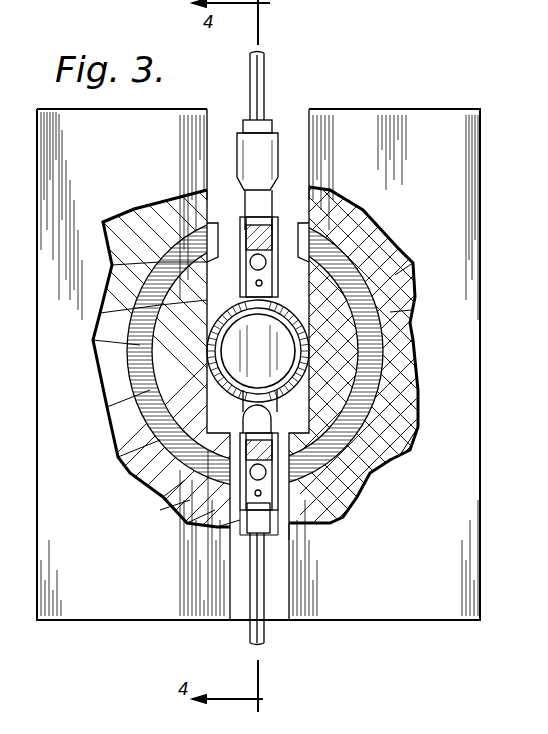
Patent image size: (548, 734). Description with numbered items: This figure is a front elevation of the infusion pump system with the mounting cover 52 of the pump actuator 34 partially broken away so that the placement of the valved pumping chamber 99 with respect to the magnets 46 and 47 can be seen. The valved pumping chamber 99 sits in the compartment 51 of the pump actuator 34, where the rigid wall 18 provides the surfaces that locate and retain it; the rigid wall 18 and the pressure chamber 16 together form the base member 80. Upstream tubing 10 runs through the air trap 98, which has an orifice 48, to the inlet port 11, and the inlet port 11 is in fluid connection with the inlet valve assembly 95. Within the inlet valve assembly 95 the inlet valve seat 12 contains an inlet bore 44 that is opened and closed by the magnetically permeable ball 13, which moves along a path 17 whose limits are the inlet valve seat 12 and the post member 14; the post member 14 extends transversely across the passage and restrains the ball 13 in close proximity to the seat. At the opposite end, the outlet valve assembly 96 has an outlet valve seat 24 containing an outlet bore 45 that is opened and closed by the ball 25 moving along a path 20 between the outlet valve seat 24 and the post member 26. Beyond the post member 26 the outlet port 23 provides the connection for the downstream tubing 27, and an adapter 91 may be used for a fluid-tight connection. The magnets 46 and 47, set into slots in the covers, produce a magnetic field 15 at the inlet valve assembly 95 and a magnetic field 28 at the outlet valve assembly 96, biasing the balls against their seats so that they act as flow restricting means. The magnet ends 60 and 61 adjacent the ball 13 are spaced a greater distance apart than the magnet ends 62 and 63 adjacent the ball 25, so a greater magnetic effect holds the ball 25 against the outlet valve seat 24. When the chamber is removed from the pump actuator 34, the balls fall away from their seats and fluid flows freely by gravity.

The upstream tubing 10 is at (265, 72).
The inlet port 11 is at (240, 208).
The inlet valve seat 12 is at (160, 206).
The inlet flow restricting ball 13 is at (384, 231).
The post member 14 is at (108, 350).
The magnetic field 15 is at (360, 214).
The pressure chamber 16 is at (405, 311).
The path 17 is at (118, 310).
The rigid wall 18 is at (412, 262).
The path 20 is at (345, 512).
The outlet port 23 is at (292, 530).
The outlet valve seat 24 is at (400, 462).
The outlet flow restricting ball 25 is at (167, 508).
The post member 26 is at (312, 516).
The downstream tubing 27 is at (266, 640).
The magnetic field 28 is at (205, 518).
The pump actuator 34 is at (493, 110).
The inlet bore 44 is at (280, 215).
The outlet bore 45 is at (148, 470).
The magnet 46 is at (125, 385).
The magnet 47 is at (420, 400).
The orifice 48 is at (270, 120).
The compartment 51 is at (236, 124).
The mounting cover 52 is at (128, 605).
The magnet end 60 is at (200, 188).
The magnet end 61 is at (328, 188).
The magnet end 62 is at (167, 493).
The magnet end 63 is at (332, 472).
The base member 80 is at (393, 373).
The adapter 91 is at (250, 537).
The inlet valve assembly 95 is at (140, 275).
The outlet valve assembly 96 is at (225, 532).
The air trap 98 is at (242, 153).
The valved pumping chamber 99 is at (288, 345).